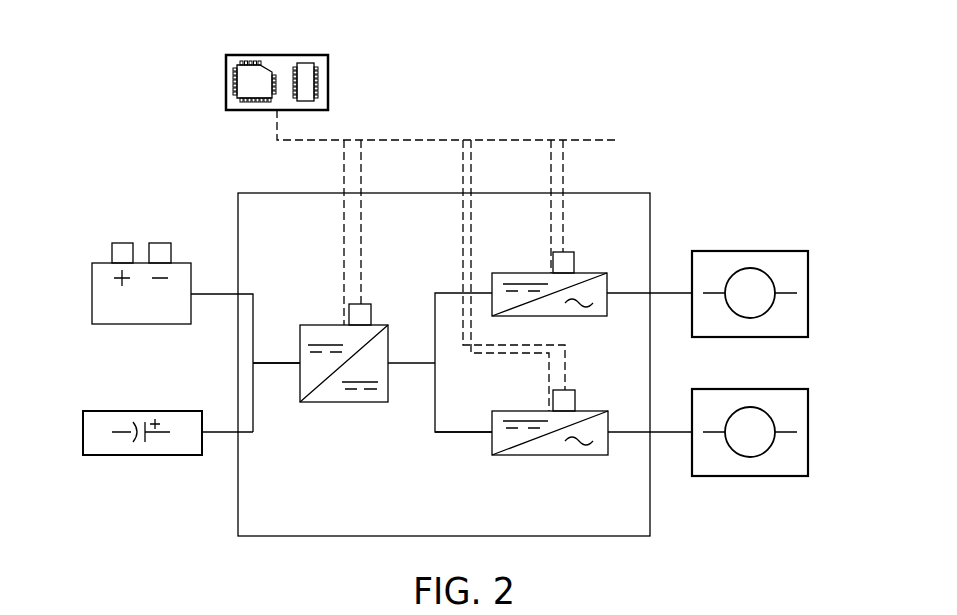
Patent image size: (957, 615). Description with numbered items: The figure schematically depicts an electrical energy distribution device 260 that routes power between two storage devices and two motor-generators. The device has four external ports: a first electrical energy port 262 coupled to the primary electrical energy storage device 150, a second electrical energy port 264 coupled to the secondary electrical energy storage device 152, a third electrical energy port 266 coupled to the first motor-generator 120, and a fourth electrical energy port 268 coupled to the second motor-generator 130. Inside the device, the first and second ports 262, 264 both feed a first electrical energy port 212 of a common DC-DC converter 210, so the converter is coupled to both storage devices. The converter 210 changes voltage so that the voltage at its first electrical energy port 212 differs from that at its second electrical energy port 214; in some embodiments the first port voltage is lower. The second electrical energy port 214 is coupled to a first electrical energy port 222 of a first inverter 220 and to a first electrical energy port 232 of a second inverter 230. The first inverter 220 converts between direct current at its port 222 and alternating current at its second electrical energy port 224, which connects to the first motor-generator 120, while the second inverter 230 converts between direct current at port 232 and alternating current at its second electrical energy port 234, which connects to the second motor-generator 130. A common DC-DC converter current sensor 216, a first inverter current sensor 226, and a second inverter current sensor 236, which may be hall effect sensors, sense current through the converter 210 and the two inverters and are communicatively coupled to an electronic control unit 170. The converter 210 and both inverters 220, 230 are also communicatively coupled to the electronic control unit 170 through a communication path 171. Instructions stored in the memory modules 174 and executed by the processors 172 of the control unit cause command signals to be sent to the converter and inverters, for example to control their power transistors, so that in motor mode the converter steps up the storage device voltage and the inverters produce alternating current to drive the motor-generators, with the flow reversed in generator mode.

The first motor-generator 120 is at (750, 251).
The second motor-generator 130 is at (750, 476).
The primary electrical energy storage device 150 is at (92, 295).
The secondary electrical energy storage device 152 is at (140, 455).
The electronic control unit 170 is at (226, 96).
The communication path 171 is at (393, 140).
The processors 172 is at (252, 72).
The memory modules 174 is at (307, 72).
The common DC-DC converter 210 is at (328, 325).
The first electrical energy port of the common DC-DC converter 212 is at (288, 364).
The second electrical energy port of the common DC-DC converter 214 is at (412, 363).
The common DC-DC converter current sensor 216 is at (366, 304).
The first inverter 220 is at (520, 273).
The first electrical energy port of the first inverter 222 is at (445, 293).
The second electrical energy port of the first inverter 224 is at (630, 293).
The first inverter current sensor 226 is at (573, 252).
The second inverter 230 is at (548, 455).
The first electrical energy port of the second inverter 232 is at (460, 432).
The second electrical energy port of the second inverter 234 is at (630, 432).
The second inverter current sensor 236 is at (573, 390).
The electrical energy distribution device 260 is at (634, 192).
The first electrical energy port 262 is at (222, 293).
The second electrical energy port 264 is at (222, 432).
The third electrical energy port 266 is at (658, 293).
The fourth electrical energy port 268 is at (658, 432).